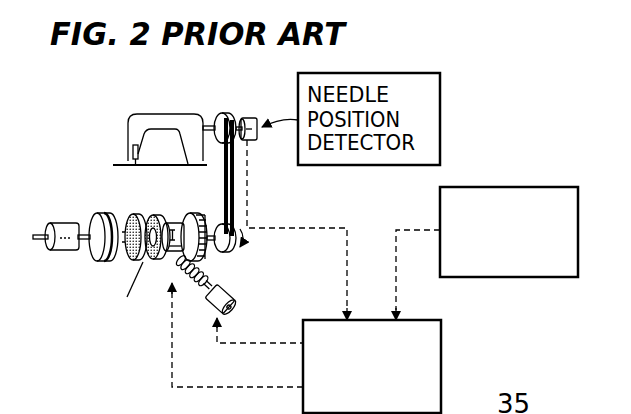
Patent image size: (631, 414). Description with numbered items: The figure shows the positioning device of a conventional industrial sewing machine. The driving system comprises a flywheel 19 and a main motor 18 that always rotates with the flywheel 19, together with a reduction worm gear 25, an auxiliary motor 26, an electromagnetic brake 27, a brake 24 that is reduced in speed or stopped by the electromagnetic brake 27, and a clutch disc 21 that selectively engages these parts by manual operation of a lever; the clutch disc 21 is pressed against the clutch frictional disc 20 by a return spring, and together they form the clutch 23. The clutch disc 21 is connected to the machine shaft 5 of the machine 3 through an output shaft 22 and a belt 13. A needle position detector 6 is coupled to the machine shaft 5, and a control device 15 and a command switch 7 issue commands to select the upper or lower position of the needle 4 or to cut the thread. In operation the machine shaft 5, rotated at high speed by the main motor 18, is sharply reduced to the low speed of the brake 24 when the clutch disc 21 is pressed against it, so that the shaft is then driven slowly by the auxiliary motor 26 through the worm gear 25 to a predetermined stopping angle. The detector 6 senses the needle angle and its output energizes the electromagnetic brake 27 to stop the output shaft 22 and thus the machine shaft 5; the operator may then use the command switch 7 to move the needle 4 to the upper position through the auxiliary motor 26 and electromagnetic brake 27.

The machine 3 is at (160, 115).
The needle 4 is at (133, 160).
The machine shaft 5 is at (211, 127).
The needle position detector 6 is at (247, 118).
The command switch 7 is at (541, 187).
The belt 13 is at (233, 187).
The control device 15 is at (441, 334).
The main motor 18 is at (62, 252).
The flywheel 19 is at (90, 213).
The clutch frictional disc 20 is at (147, 213).
The clutch disc 21 is at (127, 262).
The output shaft 22 is at (202, 213).
The clutch 23 is at (130, 332).
The brake 24 is at (158, 213).
The reduction worm gear 25 is at (210, 283).
The auxiliary motor 26 is at (232, 292).
The electromagnetic brake 27 is at (167, 262).